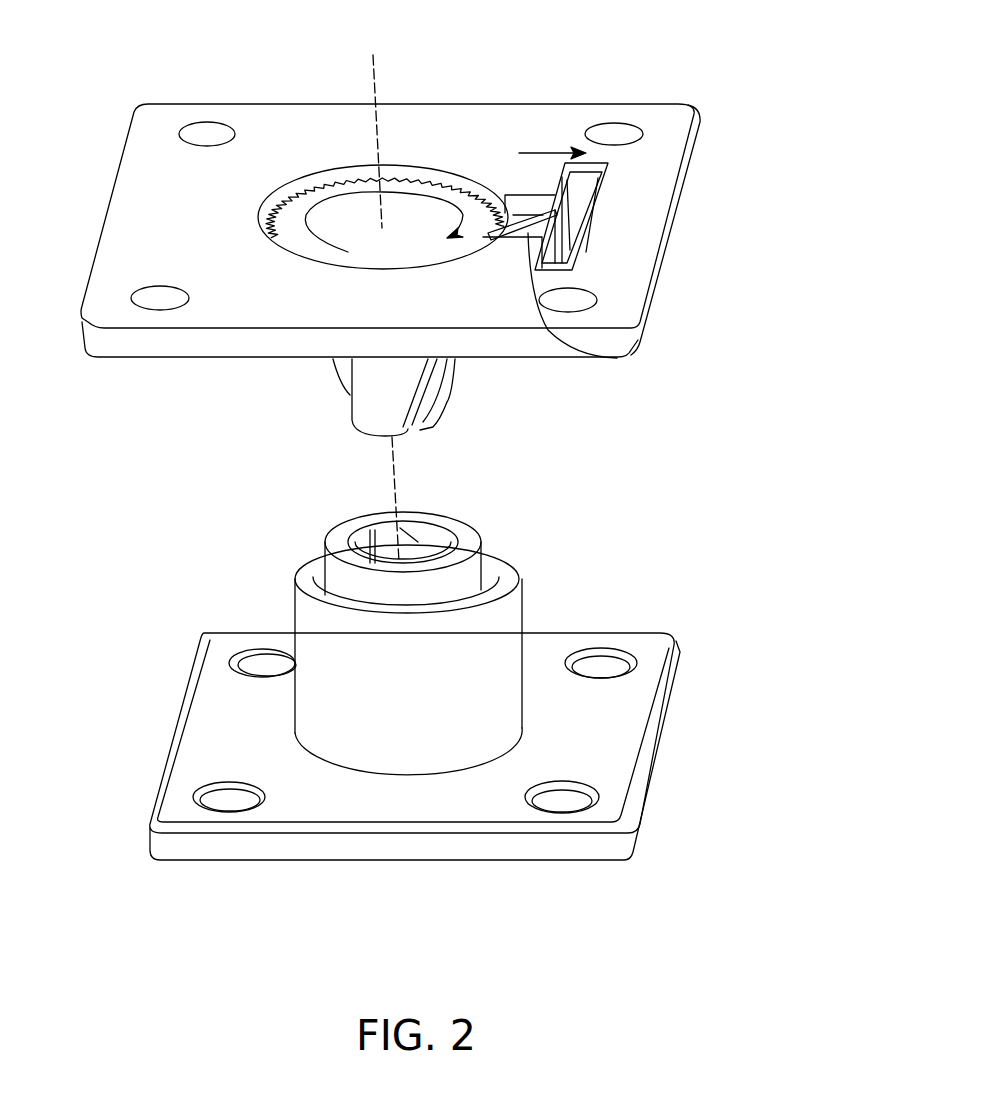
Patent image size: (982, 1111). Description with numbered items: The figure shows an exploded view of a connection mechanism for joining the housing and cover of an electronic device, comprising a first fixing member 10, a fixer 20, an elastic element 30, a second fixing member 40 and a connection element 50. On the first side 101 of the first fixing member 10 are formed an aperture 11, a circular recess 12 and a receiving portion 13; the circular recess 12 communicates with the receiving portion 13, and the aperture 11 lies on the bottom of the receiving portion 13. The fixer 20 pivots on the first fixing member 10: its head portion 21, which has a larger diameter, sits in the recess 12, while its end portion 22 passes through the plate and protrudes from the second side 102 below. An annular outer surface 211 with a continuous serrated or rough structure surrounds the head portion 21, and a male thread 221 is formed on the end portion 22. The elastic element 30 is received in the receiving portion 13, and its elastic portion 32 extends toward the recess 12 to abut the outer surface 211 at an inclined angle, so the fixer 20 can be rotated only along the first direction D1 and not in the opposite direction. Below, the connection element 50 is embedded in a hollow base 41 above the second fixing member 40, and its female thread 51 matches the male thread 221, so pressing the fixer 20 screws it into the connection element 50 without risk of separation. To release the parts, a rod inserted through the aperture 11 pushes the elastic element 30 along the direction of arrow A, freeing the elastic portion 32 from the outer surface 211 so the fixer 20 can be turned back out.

The first fixing member 10 is at (395, 235).
The first side 101 is at (164, 140).
The second side 102 is at (148, 359).
The aperture 11 is at (571, 255).
The circular recess 12 is at (268, 212).
The receiving portion 13 is at (620, 219).
The fixer 20 is at (410, 400).
The head portion 21 is at (414, 136).
The annular outer surface 211 is at (462, 187).
The end portion 22 is at (358, 410).
The male thread 221 is at (431, 424).
The elastic element 30 is at (562, 227).
The elastic portion 32 is at (617, 358).
The second fixing member 40 is at (656, 772).
The hollow base 41 is at (313, 623).
The connection element 50 is at (395, 527).
The female thread 51 is at (427, 535).
The arrow direction A is at (552, 151).
The first direction D1 is at (348, 200).